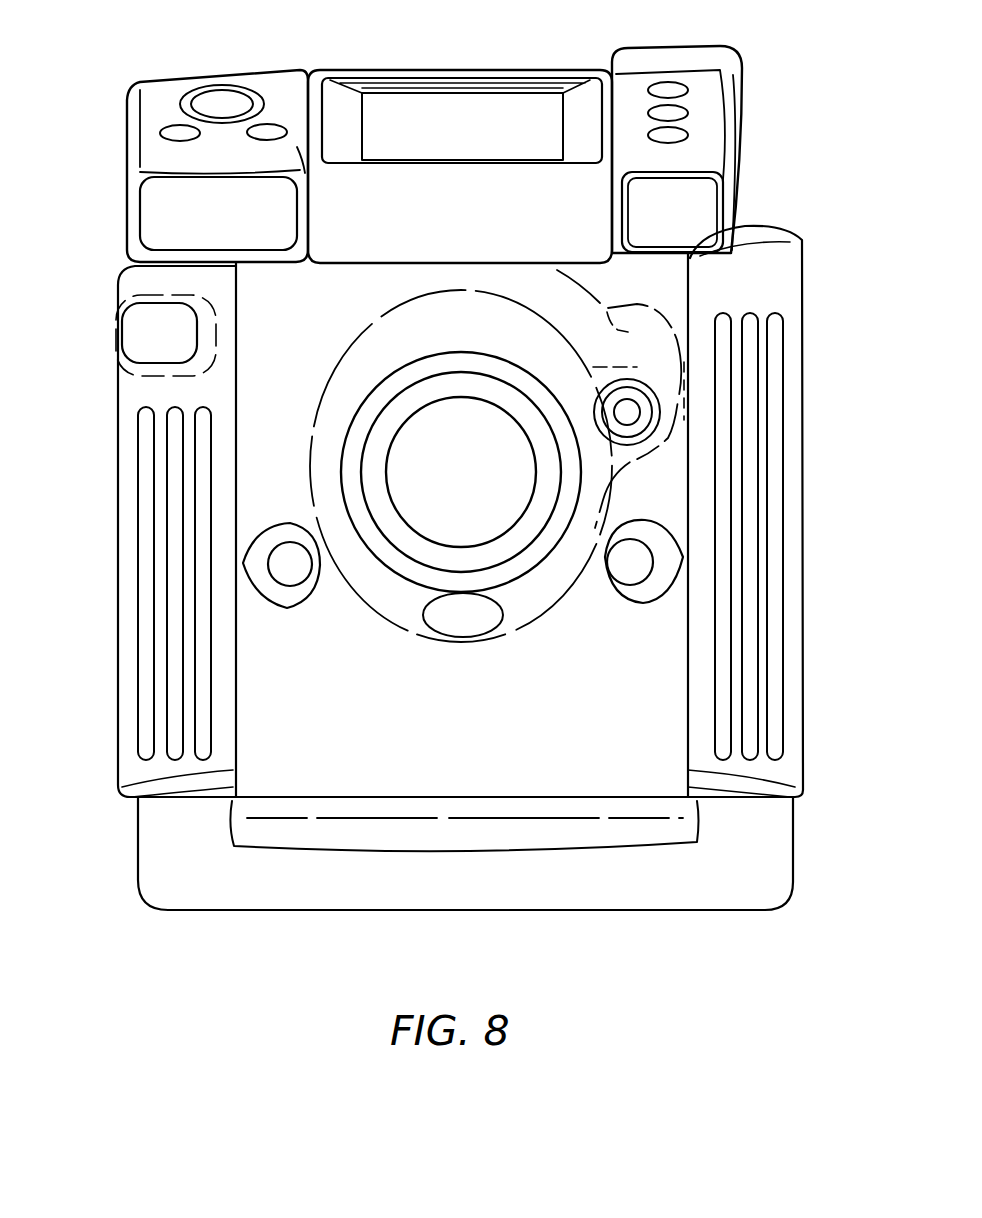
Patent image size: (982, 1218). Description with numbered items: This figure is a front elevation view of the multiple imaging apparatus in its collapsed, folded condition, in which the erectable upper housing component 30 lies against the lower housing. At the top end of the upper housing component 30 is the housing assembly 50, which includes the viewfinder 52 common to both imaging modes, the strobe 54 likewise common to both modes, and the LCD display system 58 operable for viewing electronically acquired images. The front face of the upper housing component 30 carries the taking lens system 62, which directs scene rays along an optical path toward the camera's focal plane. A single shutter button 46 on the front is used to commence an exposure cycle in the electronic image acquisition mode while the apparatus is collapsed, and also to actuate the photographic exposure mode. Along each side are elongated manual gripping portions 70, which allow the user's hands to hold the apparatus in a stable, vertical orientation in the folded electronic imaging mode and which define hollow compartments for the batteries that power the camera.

The upper housing component 30 is at (428, 723).
The shutter button 46 is at (152, 332).
The housing assembly 50 is at (317, 70).
The viewfinder 52 is at (170, 212).
The strobe 54 is at (690, 205).
The LCD display system 58 is at (465, 83).
The taking lens system 62 is at (512, 543).
The manual gripping portions 70 is at (803, 520).